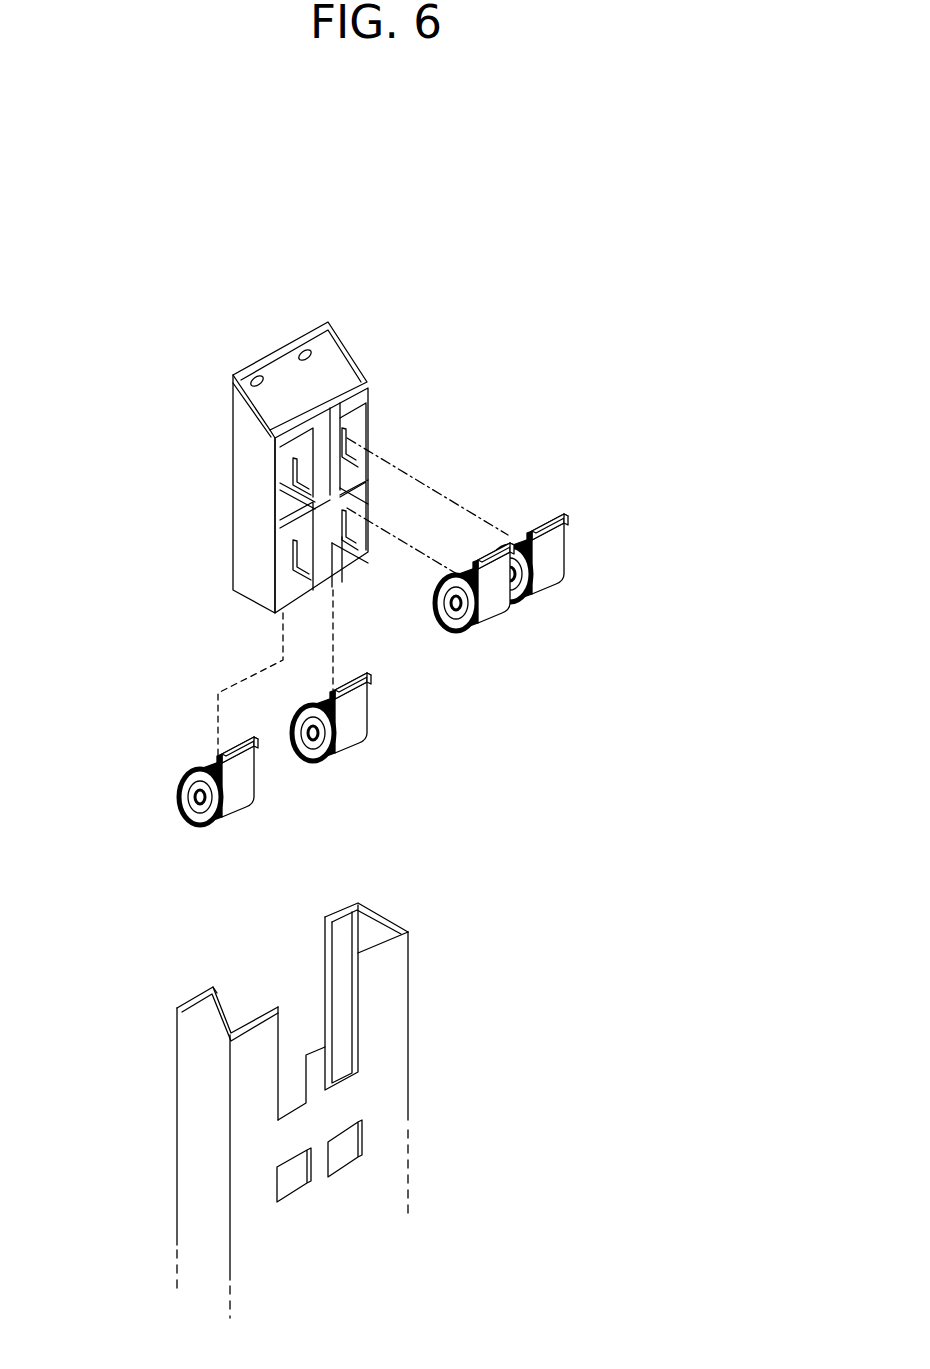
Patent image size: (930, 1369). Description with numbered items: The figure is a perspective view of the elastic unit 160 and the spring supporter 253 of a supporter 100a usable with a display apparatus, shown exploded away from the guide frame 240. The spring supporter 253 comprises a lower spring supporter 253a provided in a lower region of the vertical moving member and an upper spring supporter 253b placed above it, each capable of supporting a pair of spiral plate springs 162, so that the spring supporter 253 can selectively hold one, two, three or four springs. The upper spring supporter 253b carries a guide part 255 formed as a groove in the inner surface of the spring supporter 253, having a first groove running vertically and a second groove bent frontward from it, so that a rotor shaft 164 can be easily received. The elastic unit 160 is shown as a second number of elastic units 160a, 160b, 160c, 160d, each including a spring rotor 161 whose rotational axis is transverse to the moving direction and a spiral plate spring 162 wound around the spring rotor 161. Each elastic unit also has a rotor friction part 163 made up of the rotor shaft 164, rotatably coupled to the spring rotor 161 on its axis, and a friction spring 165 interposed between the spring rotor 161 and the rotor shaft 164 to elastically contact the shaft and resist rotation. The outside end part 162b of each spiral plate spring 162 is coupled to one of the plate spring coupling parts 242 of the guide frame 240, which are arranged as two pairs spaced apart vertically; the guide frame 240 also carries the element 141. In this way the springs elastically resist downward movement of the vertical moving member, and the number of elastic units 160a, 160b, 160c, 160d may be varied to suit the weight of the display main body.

The supporter 100a is at (612, 287).
The spring supporter 253 is at (120, 482).
The lower spring supporter 253a is at (292, 555).
The upper spring supporter 253b is at (292, 476).
The guide part 255 is at (352, 515).
The elastic unit 160 is at (675, 687).
The elastic unit 160a is at (240, 808).
The elastic unit 160b is at (350, 738).
The elastic unit 160c is at (470, 552).
The elastic unit 160d is at (564, 556).
The spring rotor 161 is at (527, 642).
The spiral plate spring 162 is at (576, 624).
The outside end part 162b is at (579, 610).
The rotor friction part 163 is at (463, 667).
The rotor shaft 164 is at (473, 654).
The friction spring 165 is at (445, 653).
The guide rail 141 is at (375, 935).
The guide frame 240 is at (409, 1122).
The plate spring coupling parts 242 is at (289, 1204).